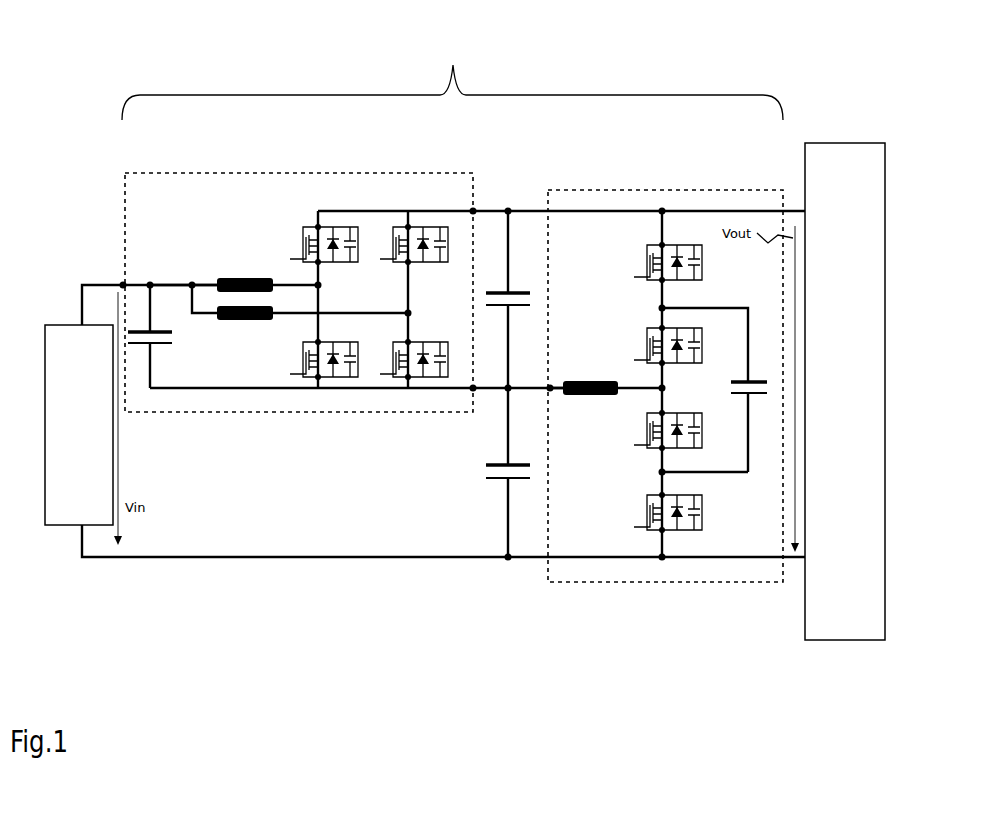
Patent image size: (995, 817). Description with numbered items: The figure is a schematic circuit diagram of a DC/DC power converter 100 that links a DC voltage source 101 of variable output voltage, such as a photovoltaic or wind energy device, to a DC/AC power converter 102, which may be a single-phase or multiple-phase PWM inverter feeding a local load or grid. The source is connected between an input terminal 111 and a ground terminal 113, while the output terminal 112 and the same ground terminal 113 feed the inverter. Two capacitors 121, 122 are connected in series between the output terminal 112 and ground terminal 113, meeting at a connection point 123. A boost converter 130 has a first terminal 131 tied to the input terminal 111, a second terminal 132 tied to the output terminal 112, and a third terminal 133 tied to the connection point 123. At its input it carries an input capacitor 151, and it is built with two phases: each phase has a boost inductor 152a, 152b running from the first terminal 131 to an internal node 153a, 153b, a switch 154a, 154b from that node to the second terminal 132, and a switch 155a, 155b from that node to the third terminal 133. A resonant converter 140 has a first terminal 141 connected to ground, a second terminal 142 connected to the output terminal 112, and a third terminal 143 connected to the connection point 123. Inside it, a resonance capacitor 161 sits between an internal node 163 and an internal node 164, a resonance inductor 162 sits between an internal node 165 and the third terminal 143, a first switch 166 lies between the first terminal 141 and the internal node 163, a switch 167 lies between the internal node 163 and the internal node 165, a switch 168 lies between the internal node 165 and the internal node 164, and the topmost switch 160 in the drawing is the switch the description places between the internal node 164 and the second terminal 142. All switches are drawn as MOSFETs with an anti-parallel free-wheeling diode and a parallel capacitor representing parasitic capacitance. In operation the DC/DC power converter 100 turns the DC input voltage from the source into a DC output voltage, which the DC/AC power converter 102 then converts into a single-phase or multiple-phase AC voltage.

The DC/DC power converter 100 is at (452, 72).
The DC voltage source 101 is at (68, 527).
The DC/AC power converter 102 is at (800, 605).
The input terminal 111 is at (108, 284).
The output terminal 112 is at (805, 210).
The ground terminal 113 is at (305, 558).
The capacitor 121 is at (492, 478).
The capacitor 122 is at (533, 293).
The connection point 123 is at (509, 388).
The boost converter 130 is at (125, 210).
The first terminal 131 is at (125, 283).
The second terminal 132 is at (474, 211).
The third terminal 133 is at (470, 393).
The resonant converter 140 is at (590, 190).
The first terminal 141 is at (662, 570).
The second terminal 142 is at (663, 211).
The third terminal 143 is at (605, 373).
The input capacitor 151 is at (164, 335).
The boost inductor 152a is at (242, 278).
The boost inductor 152b is at (247, 320).
The internal node 153a is at (322, 286).
The internal node 153b is at (412, 314).
The switch 154a is at (323, 227).
The switch 154b is at (413, 227).
The switch 155a is at (325, 383).
The switch 155b is at (415, 383).
The first switch 160 is at (700, 258).
The resonance capacitor 161 is at (746, 396).
The resonance inductor 162 is at (600, 396).
The internal node 163 is at (660, 472).
The internal node 164 is at (660, 308).
The internal node 165 is at (670, 389).
The first switch 166 is at (700, 512).
The switch 167 is at (688, 451).
The switch 168 is at (690, 363).